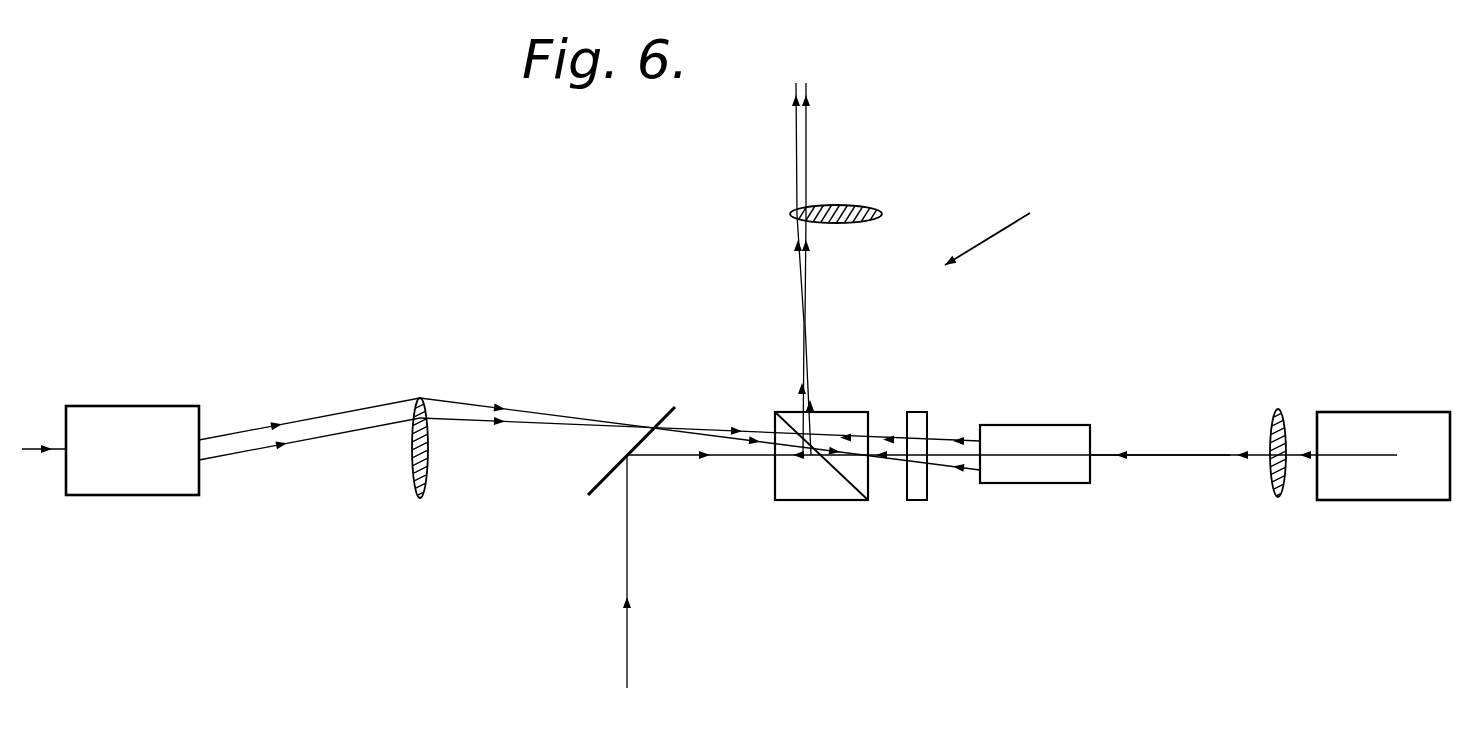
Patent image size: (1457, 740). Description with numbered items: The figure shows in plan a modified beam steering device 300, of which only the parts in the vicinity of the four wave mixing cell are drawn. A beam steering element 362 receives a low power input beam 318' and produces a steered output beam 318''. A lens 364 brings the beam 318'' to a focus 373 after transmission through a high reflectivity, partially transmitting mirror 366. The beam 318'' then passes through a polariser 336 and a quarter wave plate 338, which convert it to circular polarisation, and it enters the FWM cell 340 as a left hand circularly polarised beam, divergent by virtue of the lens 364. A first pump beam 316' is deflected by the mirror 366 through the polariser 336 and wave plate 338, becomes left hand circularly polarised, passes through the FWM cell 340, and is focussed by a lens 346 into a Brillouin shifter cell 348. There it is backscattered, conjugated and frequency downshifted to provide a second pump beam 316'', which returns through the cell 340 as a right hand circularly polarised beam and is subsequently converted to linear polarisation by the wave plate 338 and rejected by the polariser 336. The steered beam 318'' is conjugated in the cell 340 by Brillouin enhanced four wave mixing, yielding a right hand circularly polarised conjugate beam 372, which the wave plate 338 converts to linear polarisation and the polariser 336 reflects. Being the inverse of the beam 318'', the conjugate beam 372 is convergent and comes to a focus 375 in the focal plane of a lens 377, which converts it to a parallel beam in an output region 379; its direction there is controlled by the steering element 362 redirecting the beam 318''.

The beam steering device 300 is at (1016, 222).
The low power input beam 318' is at (60, 407).
The steered output beam 318'' is at (589, 424).
The beam steering element 362 is at (157, 495).
The lens 364 is at (413, 502).
The high reflectivity, partially transmitting mirror 366 is at (597, 483).
The focus 373 is at (676, 423).
The first pump beam 316' is at (1010, 569).
The second pump beam 316'' is at (1160, 501).
The polariser 336 is at (833, 500).
The quarter wave plate 338 is at (918, 500).
The FWM cell 340 is at (1035, 484).
The lens 346 is at (1280, 497).
The Brillouin shifter cell 348 is at (1380, 500).
The conjugate beam 372 is at (812, 111).
The focus 375 is at (808, 327).
The lens 377 is at (875, 212).
The output region 379 is at (745, 103).